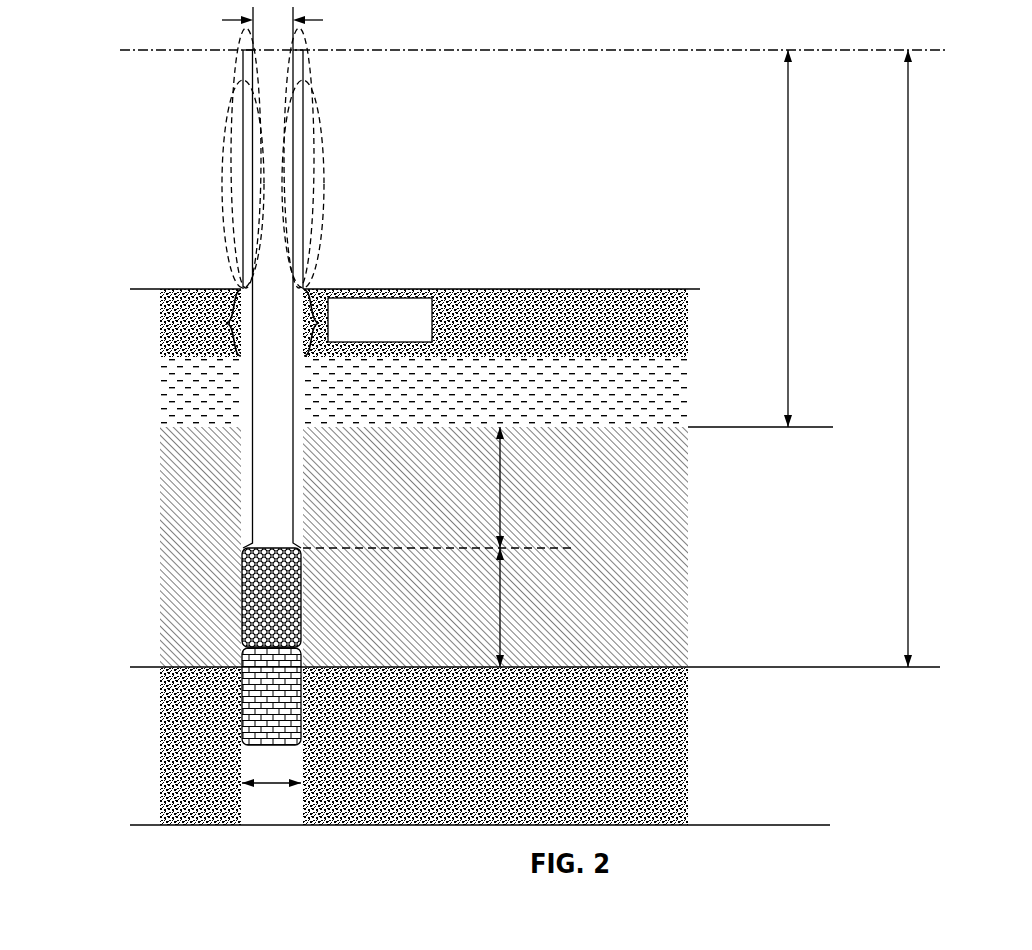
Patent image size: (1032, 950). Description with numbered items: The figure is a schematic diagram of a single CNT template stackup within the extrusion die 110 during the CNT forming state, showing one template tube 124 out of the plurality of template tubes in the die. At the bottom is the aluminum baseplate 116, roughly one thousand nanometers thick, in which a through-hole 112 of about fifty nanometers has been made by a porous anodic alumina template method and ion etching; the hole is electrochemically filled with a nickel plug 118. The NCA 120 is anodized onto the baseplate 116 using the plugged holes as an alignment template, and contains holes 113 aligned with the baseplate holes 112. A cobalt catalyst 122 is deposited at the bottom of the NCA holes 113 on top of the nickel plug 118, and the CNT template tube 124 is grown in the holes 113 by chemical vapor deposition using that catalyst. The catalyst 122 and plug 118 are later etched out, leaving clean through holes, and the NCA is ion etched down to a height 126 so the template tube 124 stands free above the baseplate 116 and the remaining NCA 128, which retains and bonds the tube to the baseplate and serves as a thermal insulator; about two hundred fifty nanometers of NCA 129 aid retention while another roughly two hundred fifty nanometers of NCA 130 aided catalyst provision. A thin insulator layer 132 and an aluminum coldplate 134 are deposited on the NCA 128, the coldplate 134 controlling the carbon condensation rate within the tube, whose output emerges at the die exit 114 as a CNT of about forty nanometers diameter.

The extrusion die 110 is at (110, 230).
The through-hole 112 is at (270, 786).
The NCA holes 113 is at (268, 505).
The die exit 114 is at (323, 20).
The aluminum baseplate 116 is at (668, 756).
The nickel plug 118 is at (260, 686).
The NCA 120 is at (908, 377).
The cobalt catalyst 122 is at (262, 595).
The CNT template tube 124 is at (333, 150).
The height 126 is at (788, 234).
The remaining NCA 128 is at (668, 548).
The NCA retaining portion 129 is at (503, 483).
The NCA catalyst portion 130 is at (503, 602).
The thin insulator layer 132 is at (668, 388).
The aluminum coldplate 134 is at (668, 320).